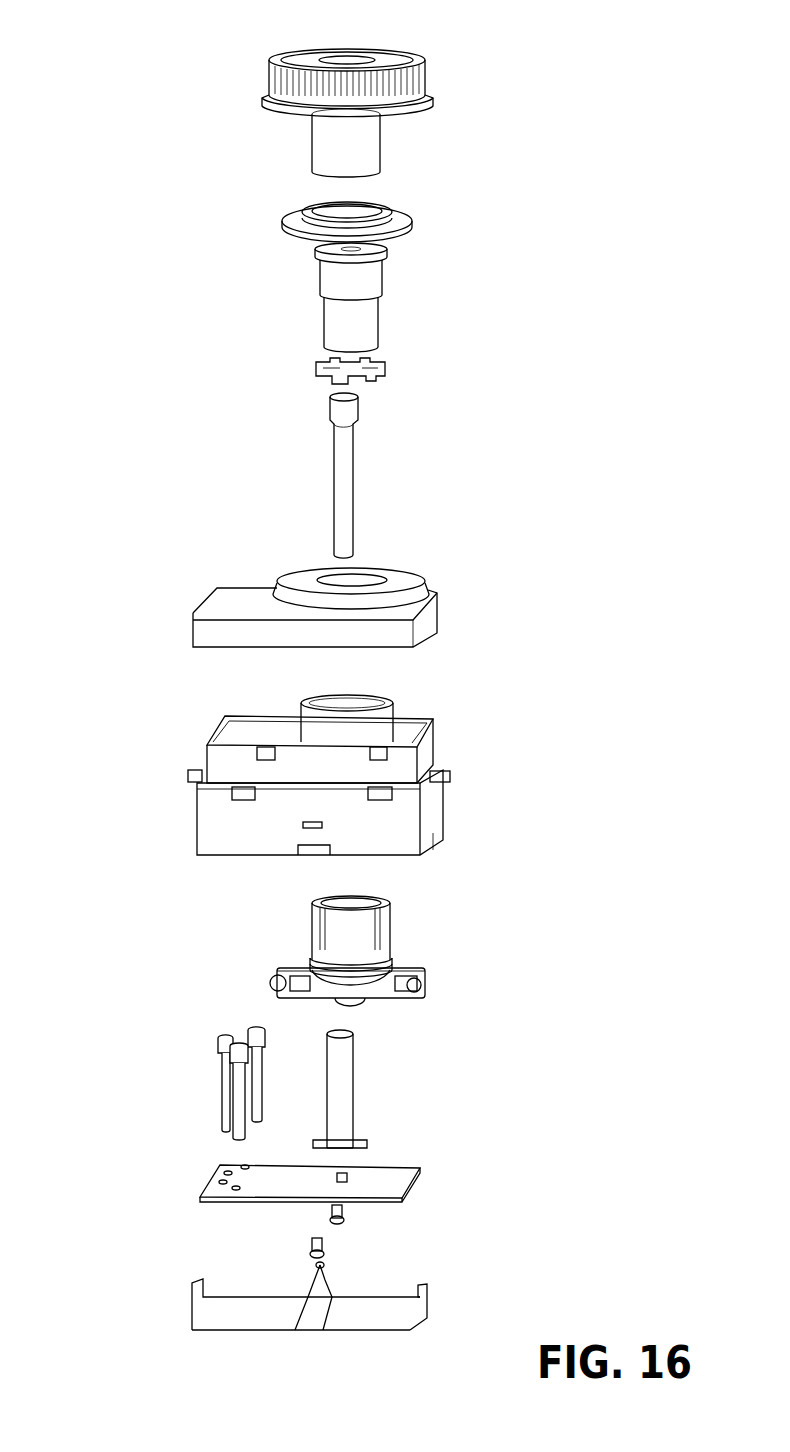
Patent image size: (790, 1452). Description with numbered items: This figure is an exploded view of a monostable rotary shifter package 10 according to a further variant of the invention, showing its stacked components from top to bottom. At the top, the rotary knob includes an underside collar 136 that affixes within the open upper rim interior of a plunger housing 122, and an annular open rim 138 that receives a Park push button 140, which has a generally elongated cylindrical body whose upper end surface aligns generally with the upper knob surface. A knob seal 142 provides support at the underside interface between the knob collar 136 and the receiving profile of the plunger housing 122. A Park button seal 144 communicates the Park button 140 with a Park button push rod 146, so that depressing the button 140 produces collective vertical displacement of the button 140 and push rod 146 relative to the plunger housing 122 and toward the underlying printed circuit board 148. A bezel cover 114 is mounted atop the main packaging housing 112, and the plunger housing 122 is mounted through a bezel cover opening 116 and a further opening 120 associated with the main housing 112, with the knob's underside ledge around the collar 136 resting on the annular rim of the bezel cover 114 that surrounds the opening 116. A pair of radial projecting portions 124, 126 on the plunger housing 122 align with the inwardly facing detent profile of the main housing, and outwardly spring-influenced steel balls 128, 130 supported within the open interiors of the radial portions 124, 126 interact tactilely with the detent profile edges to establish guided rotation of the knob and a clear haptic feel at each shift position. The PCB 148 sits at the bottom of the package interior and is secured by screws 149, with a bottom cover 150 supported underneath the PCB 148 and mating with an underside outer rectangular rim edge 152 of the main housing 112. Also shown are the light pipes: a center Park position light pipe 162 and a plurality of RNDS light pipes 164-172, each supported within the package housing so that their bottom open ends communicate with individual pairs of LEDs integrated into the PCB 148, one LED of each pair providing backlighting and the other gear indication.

The assembly 10 is at (618, 98).
The main packaging housing 112 is at (438, 803).
The bezel cover 114 is at (250, 597).
The bezel cover opening 116 is at (365, 580).
The opening 120 is at (355, 700).
The plunger housing 122 is at (395, 932).
The radial projecting portion 124 is at (297, 967).
The radial projecting portion 126 is at (398, 970).
The steel ball 128 is at (272, 983).
The steel ball 130 is at (425, 983).
The underside collar 136 is at (432, 73).
The annular open rim 138 is at (332, 57).
The Park button 140 is at (372, 322).
The knob seal 142 is at (297, 213).
The Park button seal 144 is at (312, 366).
The Park button push rod 146 is at (350, 1100).
The printed circuit board 148 is at (232, 1200).
The screws 149 is at (325, 1250).
The bottom cover 150 is at (345, 1335).
The underside outer rectangular rim edge 152 is at (228, 856).
The center Park position light pipe 162 is at (347, 450).
The RNDS light pipes 164-172 is at (222, 1097).